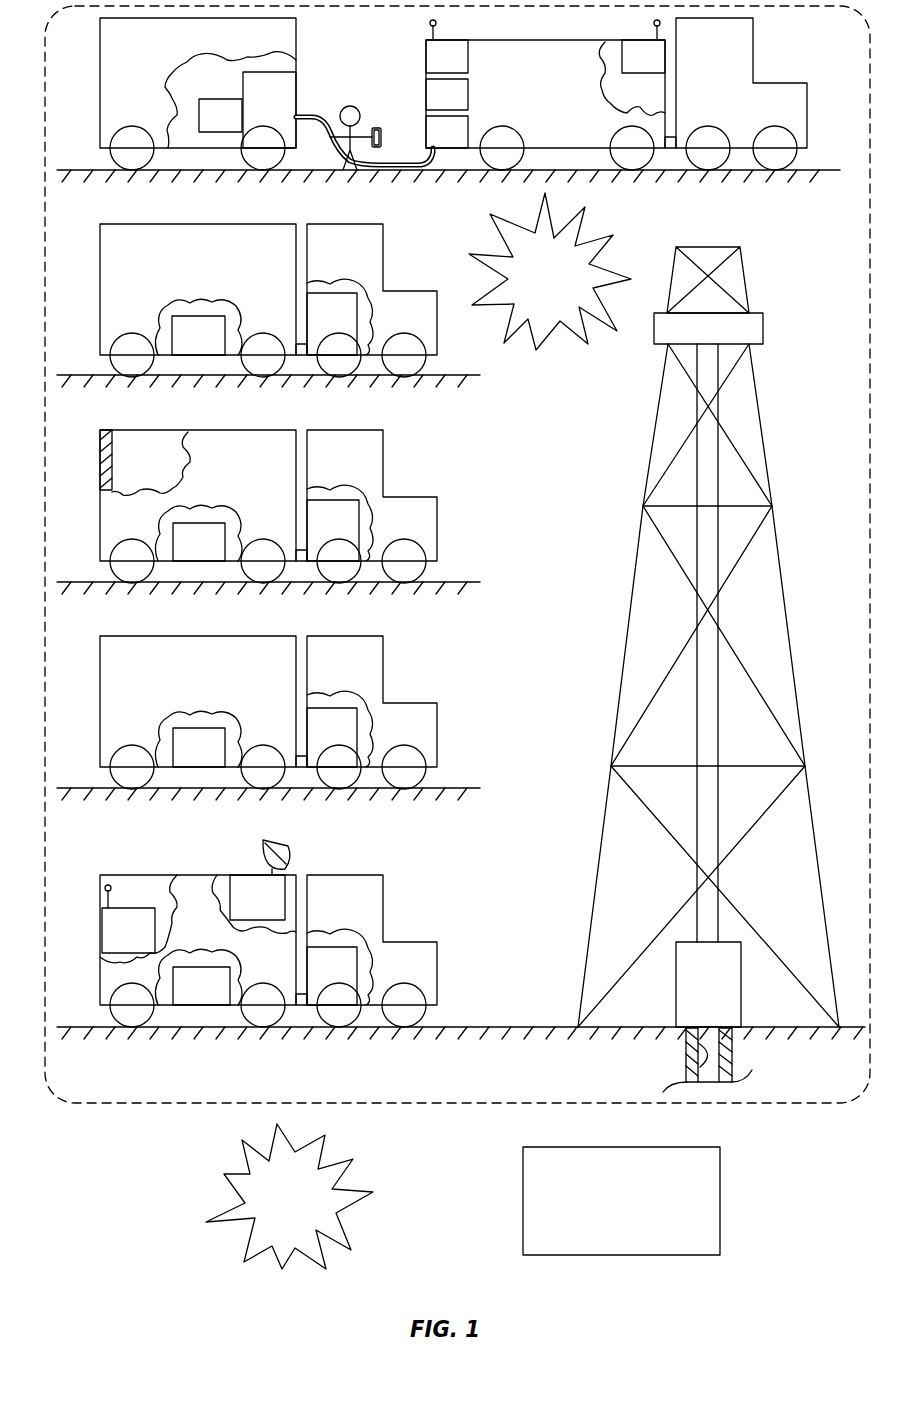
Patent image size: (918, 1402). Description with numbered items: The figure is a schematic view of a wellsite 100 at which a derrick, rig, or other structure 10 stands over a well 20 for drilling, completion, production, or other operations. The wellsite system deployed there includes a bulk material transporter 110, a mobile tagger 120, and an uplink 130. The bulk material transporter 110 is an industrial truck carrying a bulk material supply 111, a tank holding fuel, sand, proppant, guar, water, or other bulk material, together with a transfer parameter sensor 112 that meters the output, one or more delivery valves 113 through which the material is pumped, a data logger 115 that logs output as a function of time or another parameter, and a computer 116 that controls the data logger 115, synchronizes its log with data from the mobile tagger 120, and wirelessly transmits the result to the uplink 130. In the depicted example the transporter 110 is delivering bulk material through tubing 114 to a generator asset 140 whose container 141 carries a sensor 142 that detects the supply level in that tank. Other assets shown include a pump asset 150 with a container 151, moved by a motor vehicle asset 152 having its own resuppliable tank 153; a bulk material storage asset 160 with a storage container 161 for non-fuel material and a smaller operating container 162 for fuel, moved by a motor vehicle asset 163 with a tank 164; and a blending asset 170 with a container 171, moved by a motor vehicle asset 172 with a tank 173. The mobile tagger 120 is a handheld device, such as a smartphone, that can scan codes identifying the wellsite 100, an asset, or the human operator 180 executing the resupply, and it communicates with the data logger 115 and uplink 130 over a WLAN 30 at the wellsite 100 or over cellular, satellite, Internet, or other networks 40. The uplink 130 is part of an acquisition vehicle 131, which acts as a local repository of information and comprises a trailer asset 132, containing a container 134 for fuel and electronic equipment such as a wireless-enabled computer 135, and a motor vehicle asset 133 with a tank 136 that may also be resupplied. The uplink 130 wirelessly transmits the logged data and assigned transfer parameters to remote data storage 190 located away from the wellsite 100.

The structure 10 is at (790, 432).
The well 20 is at (687, 1073).
The WLAN 30 is at (538, 287).
The networks 40 is at (279, 1209).
The wellsite 100 is at (462, 1103).
The bulk material transporter 110 is at (791, 63).
The bulk material supply 111 is at (552, 109).
The transfer parameter sensor 112 is at (432, 104).
The delivery valve 113 is at (432, 141).
The tubing 114 is at (307, 116).
The data logger 115 is at (432, 67).
The computer 116 is at (627, 67).
The mobile tagger 120 is at (382, 138).
The uplink 130 is at (242, 912).
The acquisition vehicle 131 is at (420, 919).
The trailer asset 132 is at (100, 976).
The motor vehicle asset 133 is at (330, 912).
The container 134 is at (186, 999).
The wireless-enabled computer 135 is at (111, 944).
The tank 136 is at (316, 977).
The asset 140 is at (115, 54).
The container 141 is at (253, 102).
The sensor 142 is at (205, 127).
The pump asset 150 is at (115, 261).
The container 151 is at (182, 346).
The motor vehicle asset 152 is at (330, 261).
The tank 153 is at (316, 324).
The bulk material storage asset 160 is at (100, 496).
The storage container 161 is at (136, 466).
The operating container 162 is at (182, 554).
The motor vehicle asset 163 is at (330, 466).
The tank 164 is at (316, 531).
The blending asset 170 is at (115, 674).
The container 171 is at (182, 761).
The motor vehicle asset 172 is at (330, 674).
The tank 173 is at (316, 739).
The human operator 180 is at (357, 107).
The remote data storage 190 is at (611, 1219).